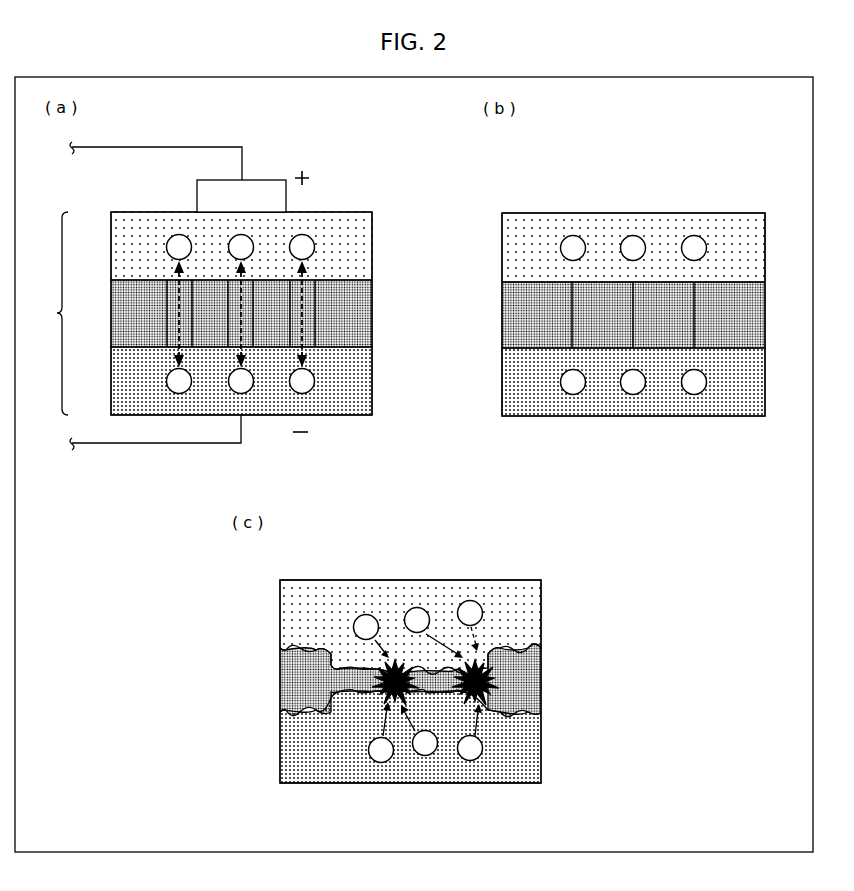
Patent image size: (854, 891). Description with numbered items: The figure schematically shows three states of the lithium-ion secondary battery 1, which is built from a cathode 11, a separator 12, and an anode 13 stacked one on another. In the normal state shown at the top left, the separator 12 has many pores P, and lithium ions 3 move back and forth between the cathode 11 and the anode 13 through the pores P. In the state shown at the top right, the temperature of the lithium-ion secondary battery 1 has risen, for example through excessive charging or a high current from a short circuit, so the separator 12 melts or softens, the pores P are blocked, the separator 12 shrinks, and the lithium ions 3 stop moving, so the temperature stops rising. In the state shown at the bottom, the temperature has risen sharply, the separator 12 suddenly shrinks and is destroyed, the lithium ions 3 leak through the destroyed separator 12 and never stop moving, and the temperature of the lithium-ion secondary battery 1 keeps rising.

The lithium-ion secondary battery 1 is at (55, 313).
The lithium ions 3 is at (178, 238).
The cathode 11 is at (112, 247).
The separator 12 is at (112, 313).
The anode 13 is at (112, 382).
The pores P is at (183, 303).